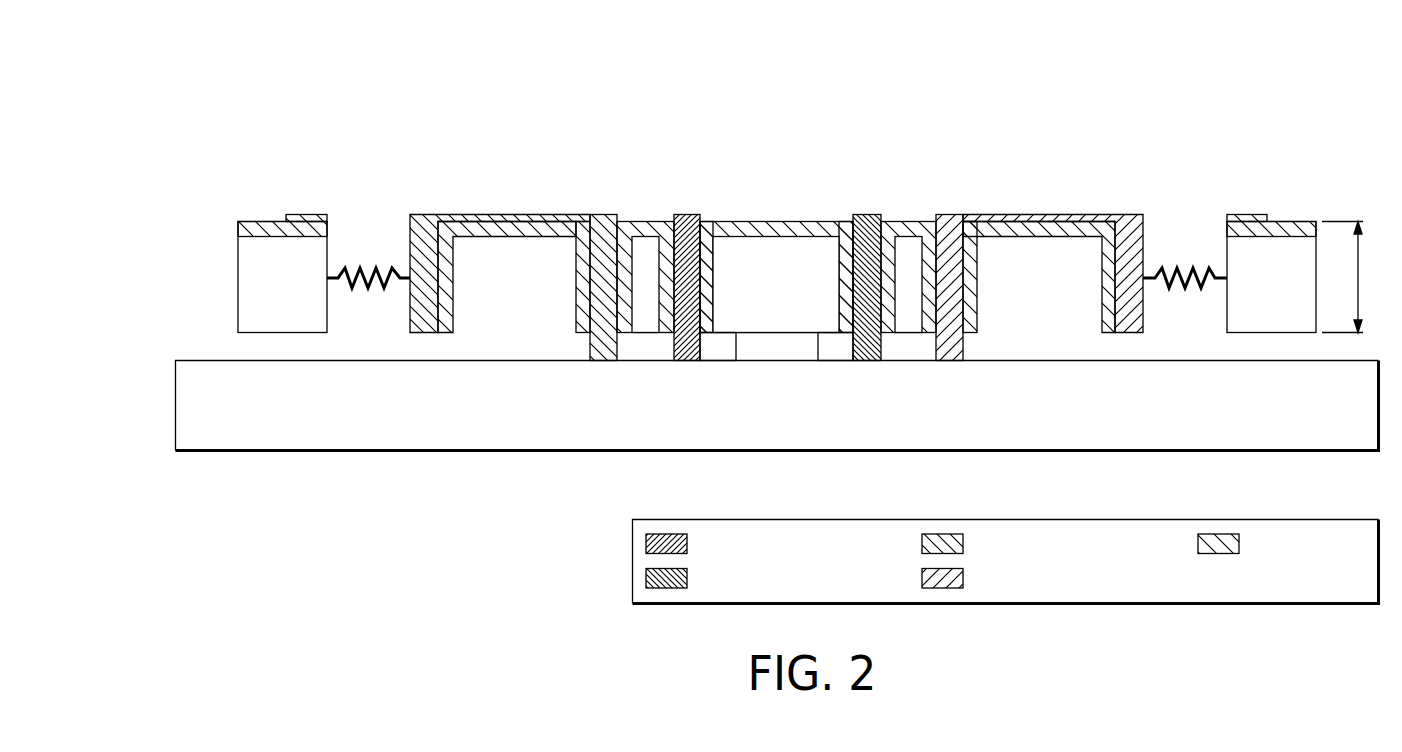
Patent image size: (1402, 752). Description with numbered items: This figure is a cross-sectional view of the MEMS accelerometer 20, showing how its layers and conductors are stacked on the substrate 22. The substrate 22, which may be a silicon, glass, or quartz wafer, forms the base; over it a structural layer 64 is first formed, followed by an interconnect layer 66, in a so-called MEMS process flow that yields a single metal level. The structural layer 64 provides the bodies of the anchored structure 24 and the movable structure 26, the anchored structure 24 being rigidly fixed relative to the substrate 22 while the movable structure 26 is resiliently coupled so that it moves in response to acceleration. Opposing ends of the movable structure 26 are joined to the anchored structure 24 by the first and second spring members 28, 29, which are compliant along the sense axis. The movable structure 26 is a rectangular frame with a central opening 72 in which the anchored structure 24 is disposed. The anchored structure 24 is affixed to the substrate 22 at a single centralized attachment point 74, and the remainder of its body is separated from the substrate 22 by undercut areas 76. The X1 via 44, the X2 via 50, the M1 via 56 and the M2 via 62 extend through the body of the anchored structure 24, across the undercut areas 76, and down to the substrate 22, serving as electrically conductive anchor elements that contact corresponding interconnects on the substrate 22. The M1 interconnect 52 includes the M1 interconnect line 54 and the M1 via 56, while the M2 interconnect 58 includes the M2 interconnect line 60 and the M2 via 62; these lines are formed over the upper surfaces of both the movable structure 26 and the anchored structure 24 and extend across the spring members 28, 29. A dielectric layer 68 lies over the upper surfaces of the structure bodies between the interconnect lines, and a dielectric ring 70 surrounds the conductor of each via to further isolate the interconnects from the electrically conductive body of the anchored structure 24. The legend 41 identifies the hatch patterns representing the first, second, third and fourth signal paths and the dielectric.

The MEMS accelerometer 20 is at (237, 85).
The substrate 22 is at (318, 438).
The anchored structure 24 is at (1060, 210).
The movable structure 26 is at (268, 210).
The first spring member 28 is at (371, 266).
The second spring member 29 is at (1181, 266).
The legend 41 is at (1330, 519).
The X1 via 44 is at (687, 224).
The X2 via 50 is at (868, 222).
The M1 interconnect 52 is at (450, 210).
The M1 interconnect line 54 is at (483, 213).
The M1 via 56 is at (604, 220).
The M2 interconnect 58 is at (1026, 210).
The M2 interconnect line 60 is at (1003, 227).
The M2 via 62 is at (948, 224).
The structural layer 64 is at (232, 237).
The interconnect layer 66 is at (232, 209).
The dielectric layer 68 is at (542, 228).
The dielectric ring 70 is at (583, 292).
The central opening 72 is at (1358, 277).
The centralized attachment point 74 is at (777, 350).
The undercut areas 76 is at (510, 350).